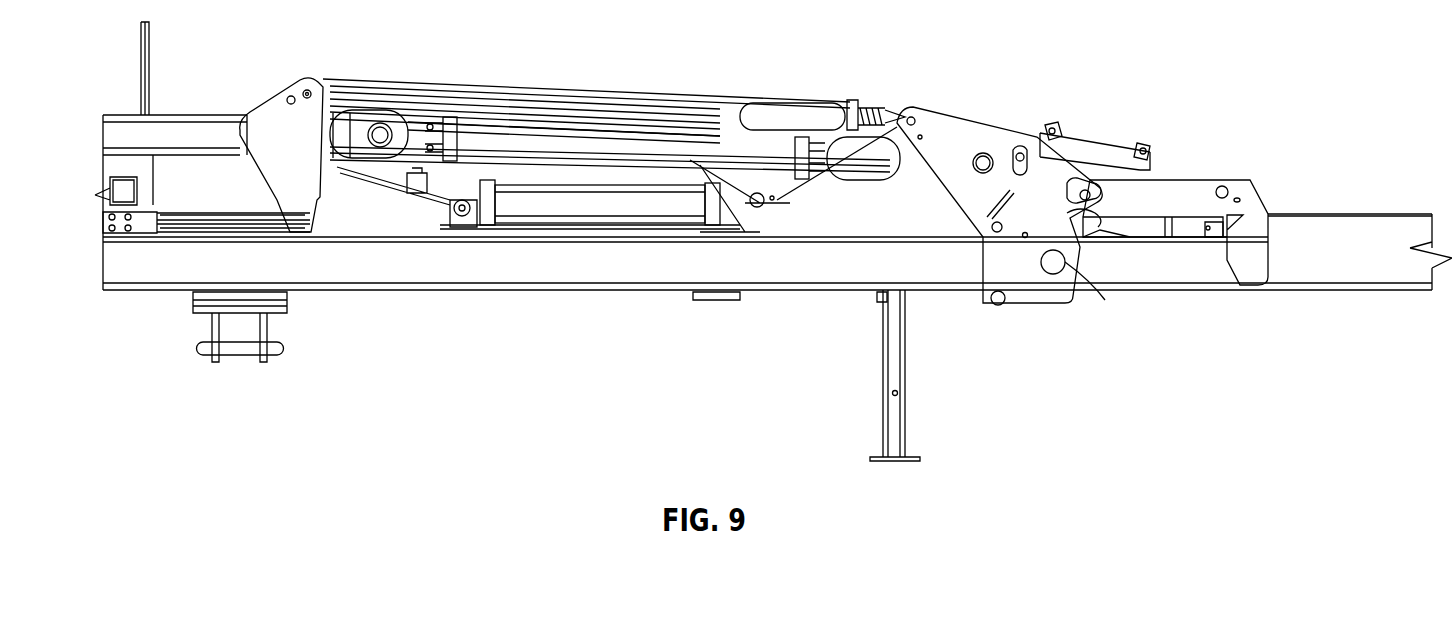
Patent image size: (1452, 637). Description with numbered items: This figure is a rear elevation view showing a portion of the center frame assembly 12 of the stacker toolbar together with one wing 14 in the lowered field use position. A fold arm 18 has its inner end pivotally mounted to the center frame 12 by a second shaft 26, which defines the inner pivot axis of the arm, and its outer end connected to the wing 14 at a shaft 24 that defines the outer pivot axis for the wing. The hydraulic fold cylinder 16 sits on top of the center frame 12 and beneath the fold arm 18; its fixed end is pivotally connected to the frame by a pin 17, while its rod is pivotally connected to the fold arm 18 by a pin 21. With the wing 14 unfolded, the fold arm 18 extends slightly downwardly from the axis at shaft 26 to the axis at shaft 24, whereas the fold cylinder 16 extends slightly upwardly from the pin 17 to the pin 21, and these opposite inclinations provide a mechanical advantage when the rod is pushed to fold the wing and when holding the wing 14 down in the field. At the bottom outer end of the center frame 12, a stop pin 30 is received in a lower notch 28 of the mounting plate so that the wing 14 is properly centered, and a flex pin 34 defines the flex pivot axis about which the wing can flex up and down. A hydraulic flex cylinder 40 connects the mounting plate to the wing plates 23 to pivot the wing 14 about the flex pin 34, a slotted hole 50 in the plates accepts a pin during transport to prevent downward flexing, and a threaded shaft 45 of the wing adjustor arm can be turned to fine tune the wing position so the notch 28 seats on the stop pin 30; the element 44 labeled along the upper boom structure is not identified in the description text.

The center frame assembly 12 is at (360, 292).
The folding wing 14 is at (1370, 295).
The hydraulic fold cylinder 16 is at (577, 228).
The pin 17 is at (468, 236).
The fold arm 18 is at (883, 172).
The pin 21 is at (758, 210).
The wing plates 23 is at (1182, 197).
The shaft 24 is at (985, 152).
The second shaft 26 is at (383, 128).
The lower notch 28 is at (1003, 288).
The stop pin 30 is at (998, 308).
The flex pin 34 is at (1067, 265).
The hydraulic flex cylinder 40 is at (1093, 140).
The boom 44 is at (600, 90).
The threaded shaft 45 is at (866, 108).
The slotted hole 50 is at (1093, 196).